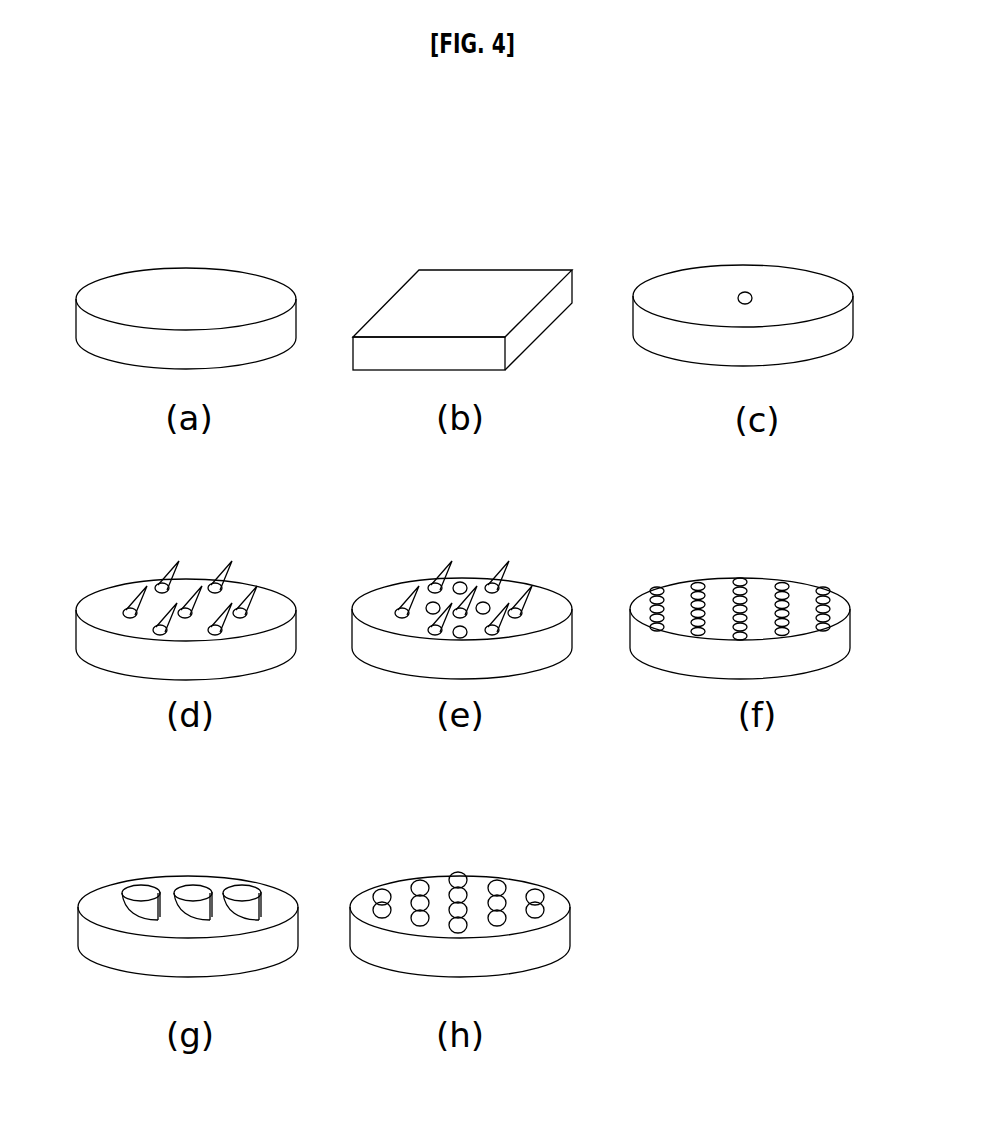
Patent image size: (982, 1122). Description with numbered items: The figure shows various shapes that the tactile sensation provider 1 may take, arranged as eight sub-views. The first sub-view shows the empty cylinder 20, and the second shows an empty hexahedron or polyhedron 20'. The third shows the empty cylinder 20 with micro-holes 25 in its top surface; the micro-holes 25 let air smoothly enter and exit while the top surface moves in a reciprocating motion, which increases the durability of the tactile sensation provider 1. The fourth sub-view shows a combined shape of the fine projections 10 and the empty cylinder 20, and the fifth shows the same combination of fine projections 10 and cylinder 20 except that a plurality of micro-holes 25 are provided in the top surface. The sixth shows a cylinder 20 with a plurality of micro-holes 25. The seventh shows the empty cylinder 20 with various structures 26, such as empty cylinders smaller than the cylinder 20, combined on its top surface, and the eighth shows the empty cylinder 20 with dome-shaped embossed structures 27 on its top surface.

The tactile sensation provider 1 is at (88, 140).
The fine projection 10 is at (223, 570).
The empty cylinder 20 is at (470, 431).
The empty hexahedron 20' is at (473, 263).
The micro-holes 25 is at (745, 293).
The structures 26 is at (247, 898).
The dome-shaped embossed structures 27 is at (463, 880).